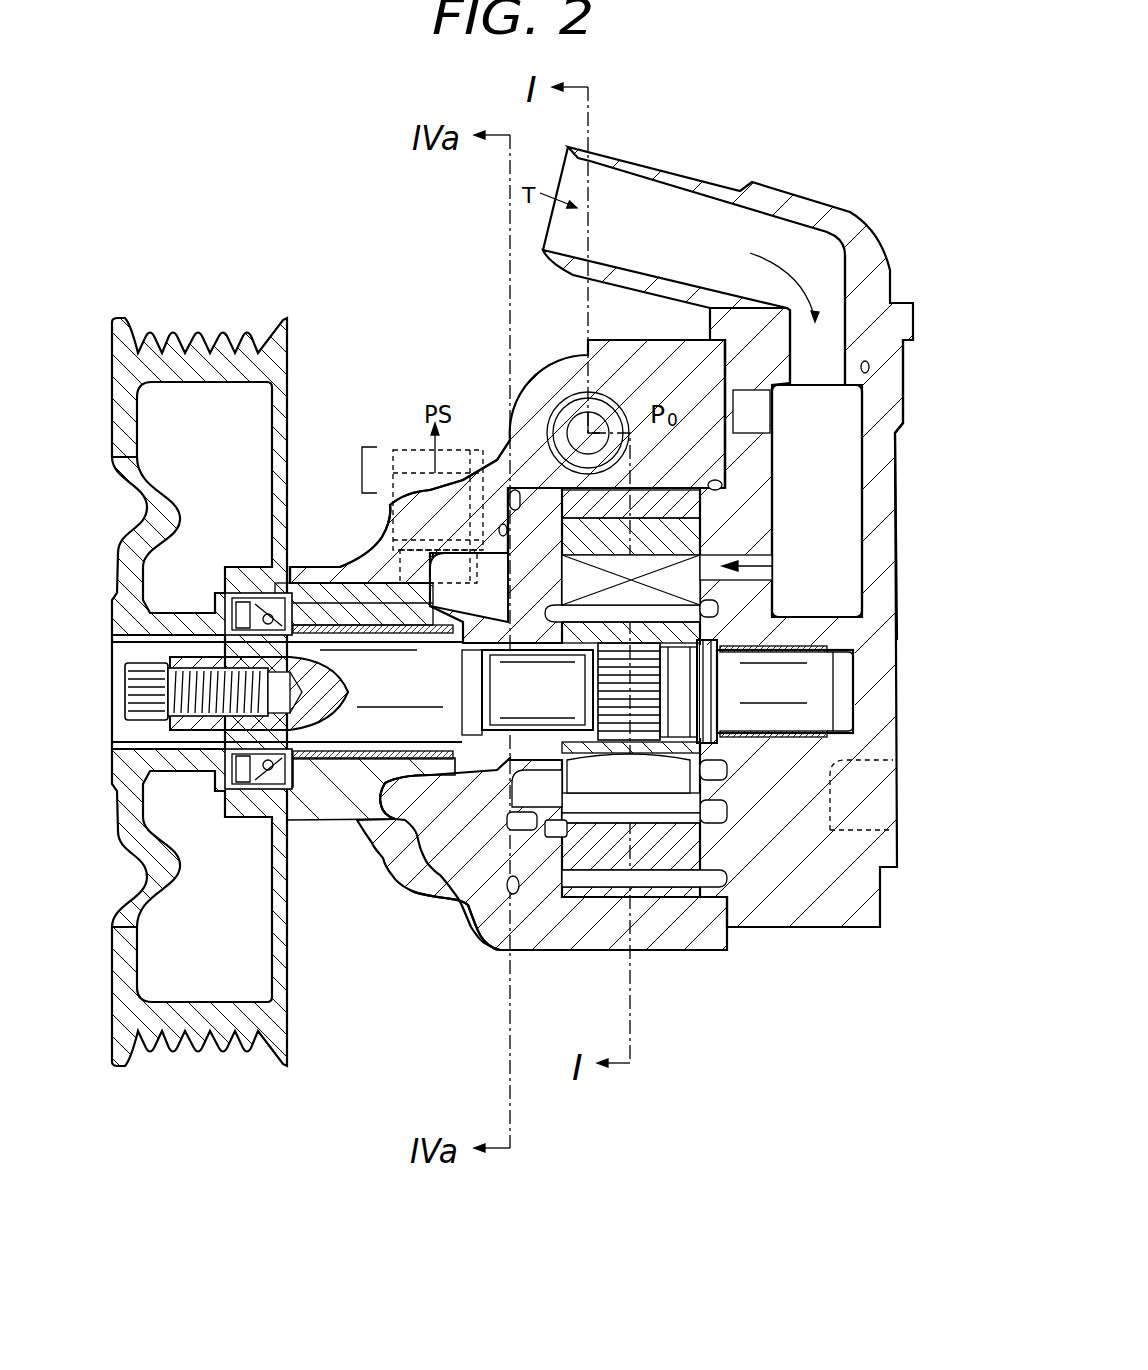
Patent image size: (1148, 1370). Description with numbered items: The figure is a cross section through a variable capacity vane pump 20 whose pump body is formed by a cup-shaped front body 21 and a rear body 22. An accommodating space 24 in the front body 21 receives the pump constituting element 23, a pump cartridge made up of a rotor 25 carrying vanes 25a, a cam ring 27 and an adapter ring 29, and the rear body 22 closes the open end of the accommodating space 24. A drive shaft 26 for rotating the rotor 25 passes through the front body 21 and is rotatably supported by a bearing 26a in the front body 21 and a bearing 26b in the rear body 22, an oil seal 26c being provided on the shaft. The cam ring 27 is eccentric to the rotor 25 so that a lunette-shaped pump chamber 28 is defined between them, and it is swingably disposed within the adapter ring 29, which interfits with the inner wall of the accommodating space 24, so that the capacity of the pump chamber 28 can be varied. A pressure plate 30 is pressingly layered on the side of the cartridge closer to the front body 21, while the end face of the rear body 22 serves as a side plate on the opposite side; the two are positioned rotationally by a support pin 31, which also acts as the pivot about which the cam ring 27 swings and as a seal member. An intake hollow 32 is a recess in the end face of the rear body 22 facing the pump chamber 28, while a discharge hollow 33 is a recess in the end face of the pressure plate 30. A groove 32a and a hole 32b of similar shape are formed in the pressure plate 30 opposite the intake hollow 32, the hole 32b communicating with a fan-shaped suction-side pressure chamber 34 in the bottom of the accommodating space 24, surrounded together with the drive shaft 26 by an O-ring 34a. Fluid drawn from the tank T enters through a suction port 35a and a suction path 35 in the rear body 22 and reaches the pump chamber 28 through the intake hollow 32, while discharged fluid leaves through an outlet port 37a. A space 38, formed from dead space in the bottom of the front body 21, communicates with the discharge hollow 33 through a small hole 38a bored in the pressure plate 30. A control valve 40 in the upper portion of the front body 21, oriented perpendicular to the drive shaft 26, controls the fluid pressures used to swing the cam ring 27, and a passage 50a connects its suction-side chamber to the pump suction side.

The variable capacity vane pump 20 is at (313, 283).
The front body 21 is at (493, 923).
The rear body 22 is at (880, 720).
The pump constituting element 23 is at (712, 840).
The accommodating space 24 is at (680, 895).
The rotor 25 is at (700, 598).
The vanes 25a is at (772, 575).
The drive shaft 26 is at (813, 677).
The bearing 26a is at (343, 762).
The bearing 26b is at (797, 733).
The oil seal 26c is at (290, 790).
The cam ring 27 is at (737, 497).
The pump chamber 28 is at (482, 900).
The adapter ring 29 is at (600, 895).
The pressure plate 30 is at (547, 560).
The support pin 31 is at (650, 895).
The intake hollow 32 is at (773, 513).
The groove 32a is at (513, 490).
The hole 32b is at (547, 600).
The discharge hollow 33 is at (555, 832).
The suction-side pressure chamber 34 is at (400, 563).
The O-ring 34a is at (503, 522).
The suction path 35 is at (833, 407).
The suction port 35a is at (603, 180).
The outlet port 37a is at (410, 450).
The space 38 is at (390, 860).
The small hole 38a is at (510, 820).
The control valve 40 is at (609, 385).
The passage 50a is at (690, 385).